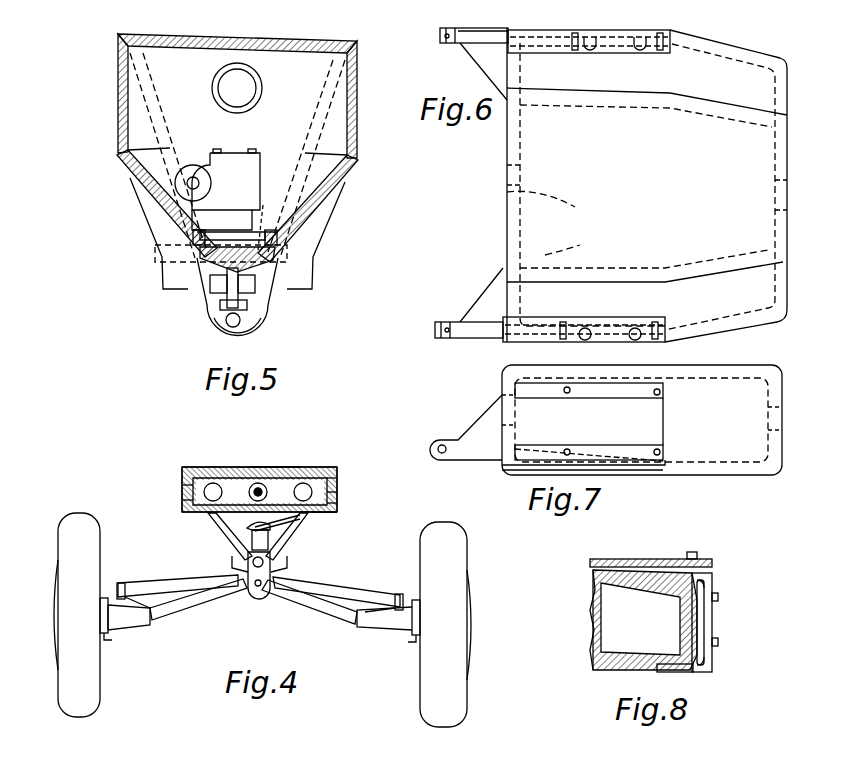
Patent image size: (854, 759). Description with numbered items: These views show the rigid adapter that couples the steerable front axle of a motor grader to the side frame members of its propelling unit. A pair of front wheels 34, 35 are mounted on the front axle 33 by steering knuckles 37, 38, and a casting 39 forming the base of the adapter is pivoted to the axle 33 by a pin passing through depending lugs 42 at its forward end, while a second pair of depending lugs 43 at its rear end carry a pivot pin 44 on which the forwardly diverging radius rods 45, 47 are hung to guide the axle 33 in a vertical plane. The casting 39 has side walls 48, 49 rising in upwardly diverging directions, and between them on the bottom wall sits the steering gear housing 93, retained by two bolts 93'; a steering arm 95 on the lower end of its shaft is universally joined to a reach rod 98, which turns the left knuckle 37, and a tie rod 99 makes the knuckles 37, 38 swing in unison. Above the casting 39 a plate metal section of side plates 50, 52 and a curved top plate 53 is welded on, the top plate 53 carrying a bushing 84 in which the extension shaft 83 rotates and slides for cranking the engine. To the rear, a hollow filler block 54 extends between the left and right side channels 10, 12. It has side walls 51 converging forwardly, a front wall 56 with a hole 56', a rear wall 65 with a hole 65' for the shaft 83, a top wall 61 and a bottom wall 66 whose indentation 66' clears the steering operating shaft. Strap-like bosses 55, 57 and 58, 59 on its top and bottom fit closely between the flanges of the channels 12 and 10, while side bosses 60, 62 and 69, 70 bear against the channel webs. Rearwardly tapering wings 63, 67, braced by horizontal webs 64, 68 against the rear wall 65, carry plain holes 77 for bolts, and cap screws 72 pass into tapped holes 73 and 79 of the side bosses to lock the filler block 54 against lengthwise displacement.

In FIG. 4, the side frame member 10 is at (183, 490).
In FIG. 8, the side frame member 10 is at (712, 622).
In FIG. 4, the side frame member 12 is at (338, 494).
In FIG. 4, the front axle 33 is at (356, 626).
In FIG. 4, the front wheel 34 is at (98, 690).
In FIG. 4, the front wheel 35 is at (420, 690).
In FIG. 4, the steering knuckle 37 is at (108, 634).
In FIG. 4, the steering knuckle 38 is at (410, 638).
In FIG. 5, the casting 39 is at (149, 243).
In FIG. 4, the casting 39 is at (226, 555).
In FIG. 5, the depending lugs 42 is at (246, 337).
In FIG. 5, the depending lugs 43 is at (222, 337).
In FIG. 4, the pivot pin 44 is at (258, 590).
In FIG. 4, the radius rod 45 is at (197, 608).
In FIG. 4, the radius rod 47 is at (315, 612).
In FIG. 5, the side wall 48 is at (134, 176).
In FIG. 4, the side wall 48 is at (220, 536).
In FIG. 5, the side wall 49 is at (340, 182).
In FIG. 4, the side wall 49 is at (298, 541).
In FIG. 5, the side plate 50 is at (117, 96).
In FIG. 6, the side walls 51 is at (722, 48).
In FIG. 8, the side walls 51 is at (688, 622).
In FIG. 5, the side plate 52 is at (358, 98).
In FIG. 5, the top plate 53 is at (246, 37).
In FIG. 4, the top plate 53 is at (270, 468).
In FIG. 6, the filler block 54 is at (508, 137).
In FIG. 4, the filler block 54 is at (240, 468).
In FIG. 8, the filler block 54 is at (596, 598).
In FIG. 6, the strap-like boss 55 is at (554, 318).
In FIG. 4, the strap-like boss 55 is at (337, 475).
In FIG. 8, the strap-like boss 55 is at (679, 574).
In FIG. 6, the front wall 56 is at (792, 219).
In FIG. 7, the front wall 56 is at (662, 420).
In FIG. 6, the hole 56' is at (796, 181).
In FIG. 7, the strap-like boss 57 is at (620, 468).
In FIG. 4, the strap-like boss 57 is at (338, 510).
In FIG. 8, the strap-like boss 57 is at (680, 672).
In FIG. 6, the strap-like boss 58 is at (617, 53).
In FIG. 4, the strap-like boss 58 is at (182, 477).
In FIG. 4, the strap-like boss 59 is at (183, 508).
In FIG. 7, the side boss 60 is at (592, 397).
In FIG. 4, the side boss 60 is at (338, 486).
In FIG. 8, the side boss 60 is at (704, 590).
In FIG. 7, the top wall 61 is at (629, 364).
In FIG. 7, the side boss 62 is at (595, 430).
In FIG. 4, the side boss 62 is at (338, 503).
In FIG. 8, the side boss 62 is at (705, 657).
In FIG. 6, the wing 63 is at (435, 326).
In FIG. 7, the wing 63 is at (462, 432).
In FIG. 6, the horizontal web 64 is at (483, 297).
In FIG. 6, the rear wall 65 is at (496, 163).
In FIG. 7, the rear wall 65 is at (493, 399).
In FIG. 6, the hole 65' is at (523, 197).
In FIG. 7, the bottom wall 66 is at (678, 445).
In FIG. 6, the indentation 66' is at (528, 243).
In FIG. 4, the indentation 66' is at (296, 525).
In FIG. 6, the wing 67 is at (440, 36).
In FIG. 6, the horizontal web 68 is at (482, 68).
In FIG. 4, the side boss 69 is at (183, 485).
In FIG. 6, the side boss 70 is at (478, 31).
In FIG. 4, the side boss 70 is at (183, 500).
In FIG. 8, the cap screws 72 is at (719, 597).
In FIG. 6, the tapped holes 73 is at (575, 33).
In FIG. 6, the plain hole 77 is at (446, 44).
In FIG. 7, the plain hole 77 is at (436, 455).
In FIG. 7, the tapped holes 79 is at (567, 394).
In FIG. 4, the extension shaft 83 is at (264, 495).
In FIG. 5, the bushing 84 is at (263, 87).
In FIG. 5, the steering gear housing 93 is at (235, 194).
In FIG. 4, the steering gear housing 93 is at (268, 536).
In FIG. 5, the bolts 93' is at (218, 250).
In FIG. 5, the steering arm 95 is at (256, 288).
In FIG. 4, the reach rod 98 is at (172, 590).
In FIG. 4, the tie rod 99 is at (383, 590).